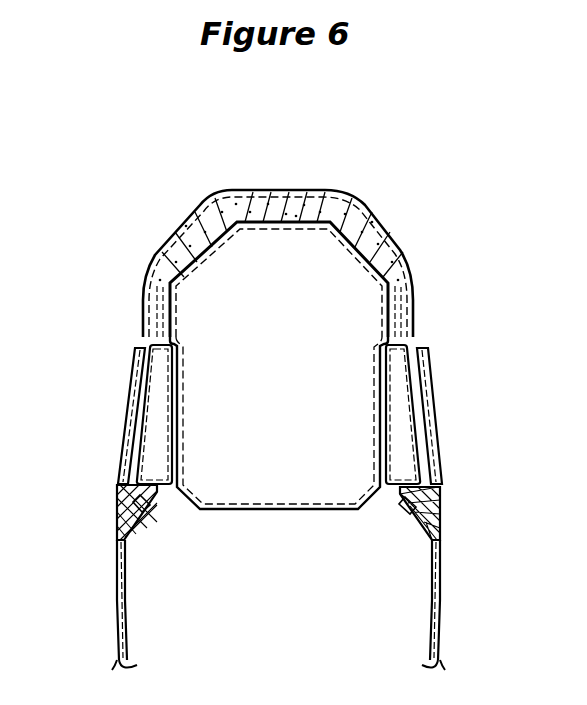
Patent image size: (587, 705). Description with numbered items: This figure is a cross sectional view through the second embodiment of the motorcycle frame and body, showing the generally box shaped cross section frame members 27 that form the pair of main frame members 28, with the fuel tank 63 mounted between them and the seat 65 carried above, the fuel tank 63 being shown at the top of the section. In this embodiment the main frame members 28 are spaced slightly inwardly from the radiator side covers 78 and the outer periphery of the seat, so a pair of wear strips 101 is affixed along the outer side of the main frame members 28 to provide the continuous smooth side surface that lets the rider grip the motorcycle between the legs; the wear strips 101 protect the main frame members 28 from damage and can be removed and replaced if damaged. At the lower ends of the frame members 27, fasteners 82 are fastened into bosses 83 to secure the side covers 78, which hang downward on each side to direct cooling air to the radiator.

The seat 65 is at (333, 192).
The fuel tank 63 is at (317, 513).
The box shaped cross section frame members 27 is at (175, 430).
The wear strips 101 is at (133, 387).
The fasteners 82 is at (117, 523).
The bosses 83 is at (155, 508).
The side covers 78 is at (113, 577).
The main frame members 28 is at (108, 357).